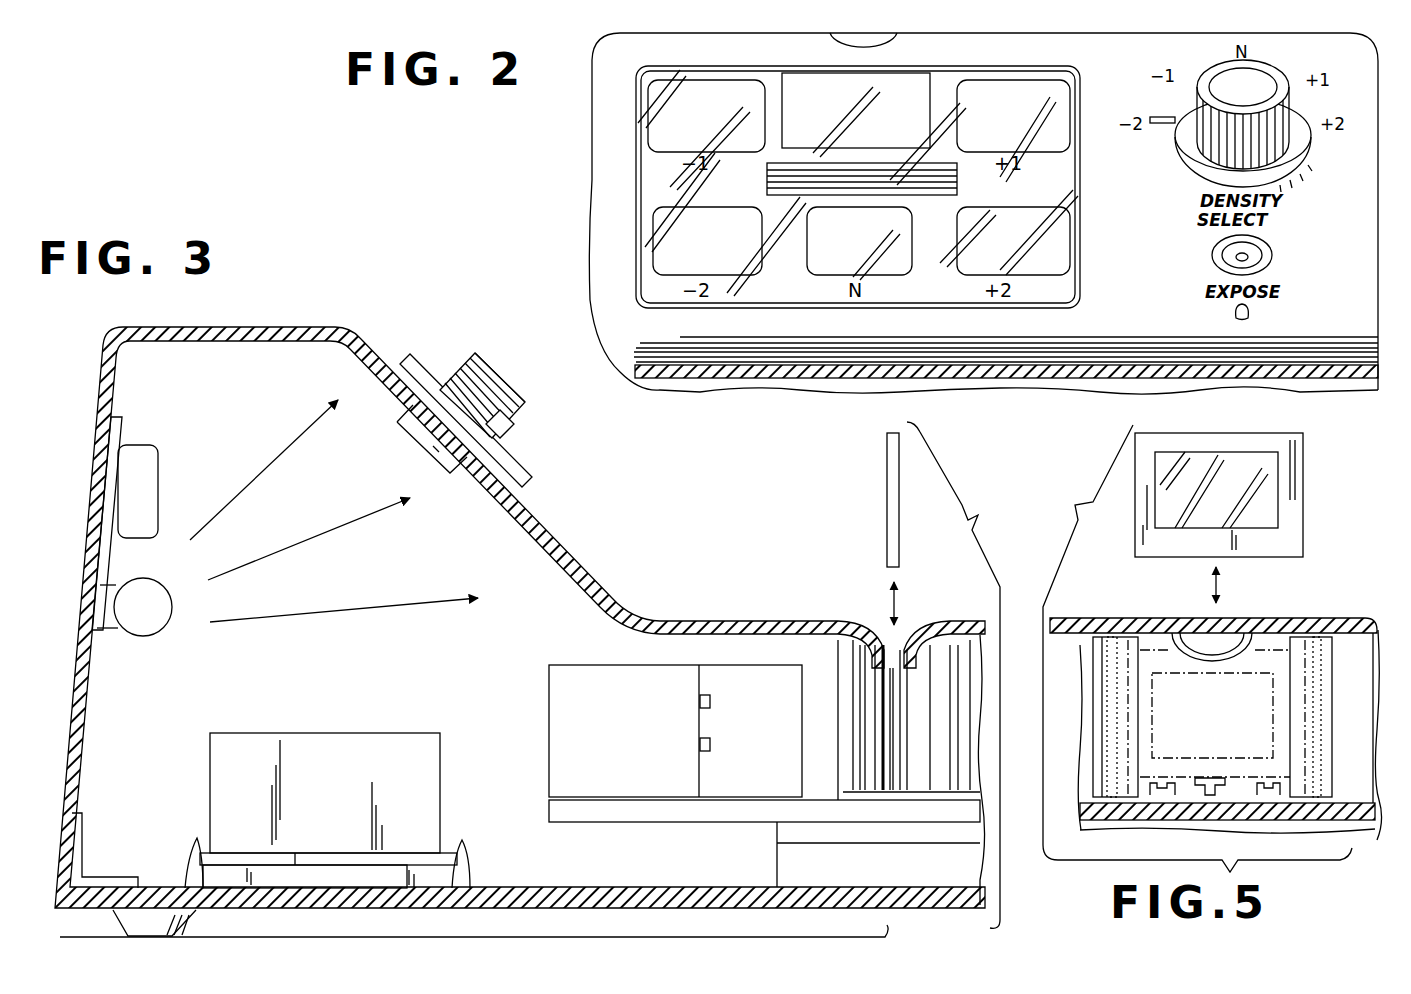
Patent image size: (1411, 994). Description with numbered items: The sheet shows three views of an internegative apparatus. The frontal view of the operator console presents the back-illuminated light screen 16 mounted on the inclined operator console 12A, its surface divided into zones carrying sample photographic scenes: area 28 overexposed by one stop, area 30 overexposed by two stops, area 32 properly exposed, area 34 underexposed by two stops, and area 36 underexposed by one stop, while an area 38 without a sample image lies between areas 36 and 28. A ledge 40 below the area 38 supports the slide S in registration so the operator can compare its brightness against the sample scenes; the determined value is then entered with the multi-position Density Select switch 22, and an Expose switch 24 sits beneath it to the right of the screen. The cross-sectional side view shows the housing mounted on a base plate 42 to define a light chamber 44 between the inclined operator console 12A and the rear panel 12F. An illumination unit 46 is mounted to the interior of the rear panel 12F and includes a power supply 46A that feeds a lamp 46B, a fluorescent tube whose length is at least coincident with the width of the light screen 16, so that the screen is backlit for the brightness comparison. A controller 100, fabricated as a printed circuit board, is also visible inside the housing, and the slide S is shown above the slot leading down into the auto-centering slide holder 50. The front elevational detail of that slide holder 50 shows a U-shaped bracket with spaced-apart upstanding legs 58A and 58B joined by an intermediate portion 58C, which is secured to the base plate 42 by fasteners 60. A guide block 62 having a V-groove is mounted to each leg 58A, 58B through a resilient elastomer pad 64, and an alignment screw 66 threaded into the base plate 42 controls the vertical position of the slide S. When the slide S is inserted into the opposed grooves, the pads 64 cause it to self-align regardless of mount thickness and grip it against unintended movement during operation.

In FIG. 2, the Density Select switch 22 is at (1275, 78).
In FIG. 3, the Density Select switch 22 is at (488, 362).
In FIG. 2, the Expose switch 24 is at (1262, 257).
In FIG. 2, the light screen area 28 is at (1006, 122).
In FIG. 2, the light screen area 30 is at (1004, 251).
In FIG. 2, the light screen area 32 is at (847, 251).
In FIG. 2, the light screen area 34 is at (709, 251).
In FIG. 2, the light screen area 36 is at (707, 127).
In FIG. 2, the area without sample image 38 is at (898, 124).
In FIG. 2, the ledge 40 is at (767, 181).
In FIG. 3, the ledge 40 is at (497, 438).
In FIG. 3, the light chamber 44 is at (131, 382).
In FIG. 3, the illumination unit 46 is at (124, 422).
In FIG. 3, the power supply 46A is at (160, 466).
In FIG. 3, the lamp 46B is at (150, 640).
In FIG. 3, the inclined operator console 12A is at (552, 502).
In FIG. 3, the rear panel 12F is at (83, 720).
In FIG. 3, the light screen 16 is at (590, 562).
In FIG. 3, the base plate 42 is at (555, 887).
In FIG. 3, the controller 100 is at (327, 733).
In FIG. 3, the slide S is at (888, 480).
In FIG. 5, the slide S is at (1305, 463).
In FIG. 5, the auto-centering slide holder 50 is at (1083, 652).
In FIG. 5, the upstanding leg 58A is at (1098, 648).
In FIG. 5, the upstanding leg 58B is at (1327, 647).
In FIG. 5, the intermediate portion 58C is at (1270, 803).
In FIG. 5, the fasteners 60 is at (1168, 780).
In FIG. 5, the guide block 62 is at (1128, 725).
In FIG. 5, the resilient elastomer pad 64 is at (1108, 690).
In FIG. 5, the alignment screw 66 is at (1218, 778).